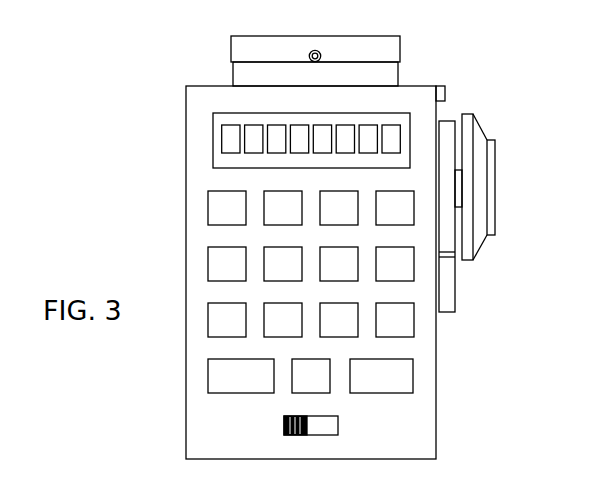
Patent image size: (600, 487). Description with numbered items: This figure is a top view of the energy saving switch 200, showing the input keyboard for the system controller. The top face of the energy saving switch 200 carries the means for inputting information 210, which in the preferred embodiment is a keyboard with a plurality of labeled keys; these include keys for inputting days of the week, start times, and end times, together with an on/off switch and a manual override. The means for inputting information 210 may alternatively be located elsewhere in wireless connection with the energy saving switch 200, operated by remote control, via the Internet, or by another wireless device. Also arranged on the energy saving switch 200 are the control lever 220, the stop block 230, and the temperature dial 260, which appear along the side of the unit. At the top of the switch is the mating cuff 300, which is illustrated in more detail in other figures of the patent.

The energy saving switch 200 is at (271, 272).
The means for inputting information 210 is at (263, 292).
The control lever 220 is at (479, 219).
The stop block 230 is at (477, 81).
The temperature dial 260 is at (503, 184).
The mating cuff 300 is at (337, 49).